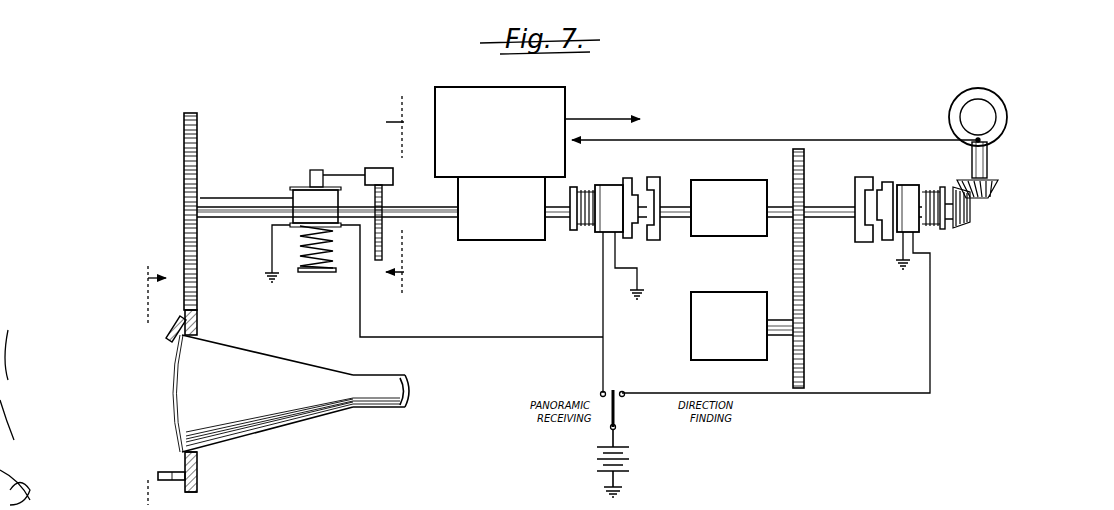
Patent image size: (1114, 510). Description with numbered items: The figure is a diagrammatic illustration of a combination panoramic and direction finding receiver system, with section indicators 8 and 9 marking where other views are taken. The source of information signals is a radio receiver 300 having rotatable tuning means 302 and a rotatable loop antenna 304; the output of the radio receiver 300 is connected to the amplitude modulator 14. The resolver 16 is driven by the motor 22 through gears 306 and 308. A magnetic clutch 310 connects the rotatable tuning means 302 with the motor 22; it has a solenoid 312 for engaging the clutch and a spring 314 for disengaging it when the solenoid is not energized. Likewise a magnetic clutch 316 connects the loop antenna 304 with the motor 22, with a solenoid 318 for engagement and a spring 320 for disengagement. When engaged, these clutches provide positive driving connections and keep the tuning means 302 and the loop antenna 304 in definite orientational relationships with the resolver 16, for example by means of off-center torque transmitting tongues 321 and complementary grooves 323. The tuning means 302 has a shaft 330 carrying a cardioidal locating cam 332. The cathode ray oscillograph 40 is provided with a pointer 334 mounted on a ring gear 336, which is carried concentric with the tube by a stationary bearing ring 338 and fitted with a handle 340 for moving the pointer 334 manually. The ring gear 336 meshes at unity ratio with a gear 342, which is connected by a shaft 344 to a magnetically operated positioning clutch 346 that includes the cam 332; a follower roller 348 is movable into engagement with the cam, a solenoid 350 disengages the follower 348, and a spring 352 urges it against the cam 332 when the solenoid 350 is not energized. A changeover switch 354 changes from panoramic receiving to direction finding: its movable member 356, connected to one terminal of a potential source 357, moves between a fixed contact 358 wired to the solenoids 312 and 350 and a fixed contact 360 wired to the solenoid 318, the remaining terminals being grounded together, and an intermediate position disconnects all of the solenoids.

The section line 8- 8 is at (149, 380).
The section line 9- 9 is at (401, 200).
The amplitude modulator 14 is at (772, 128).
The resolver 16 is at (700, 338).
The motor 22 is at (717, 230).
The cathode ray oscillograph 40 is at (205, 393).
The radio receiver 300 is at (509, 93).
The rotatable tuning means 302 is at (488, 236).
The rotatable loop antenna 304 is at (996, 132).
The gear 306 is at (793, 242).
The gear 308 is at (806, 312).
The magnetic clutch 310 is at (640, 238).
The solenoid 312 is at (607, 193).
The spring 314 is at (578, 229).
The magnetic clutch 316 is at (877, 246).
The solenoid 318 is at (905, 192).
The spring 320 is at (935, 226).
The off-center torque transmitting tongue 321 is at (633, 205).
The complementary groove 323 is at (650, 207).
The shaft 330 is at (442, 217).
The cardioidal locating cam 332 is at (378, 262).
The pointer 334 is at (167, 340).
The ring gear 336 is at (183, 313).
The stationary bearing ring 338 is at (200, 462).
The handle 340 is at (170, 472).
The gear 342 is at (184, 200).
The shaft 344 is at (247, 217).
The magnetically operated positioning clutch 346 is at (290, 191).
The follower roller 348 is at (378, 170).
The solenoid 350 is at (320, 205).
The spring 352 is at (305, 258).
The changeover switch 354 is at (606, 414).
The movable member 356 is at (617, 416).
The potential source 357 is at (630, 460).
The fixed contact 358 is at (600, 392).
The fixed contact 360 is at (626, 392).